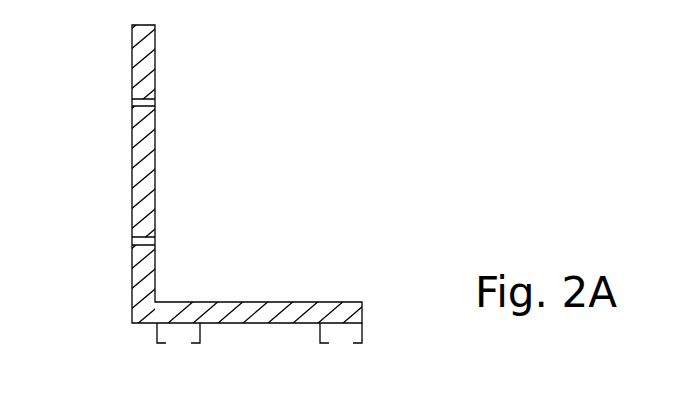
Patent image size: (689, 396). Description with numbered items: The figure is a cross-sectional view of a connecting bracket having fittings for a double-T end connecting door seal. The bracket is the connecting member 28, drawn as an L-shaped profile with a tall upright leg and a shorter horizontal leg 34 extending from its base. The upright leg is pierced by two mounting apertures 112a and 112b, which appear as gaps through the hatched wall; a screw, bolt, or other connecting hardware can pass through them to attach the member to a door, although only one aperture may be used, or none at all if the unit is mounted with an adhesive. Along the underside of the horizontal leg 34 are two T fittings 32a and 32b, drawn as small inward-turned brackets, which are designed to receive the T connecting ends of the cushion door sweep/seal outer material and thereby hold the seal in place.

The connecting member 28 is at (131, 178).
The mounting aperture 112a is at (131, 104).
The mounting aperture 112b is at (131, 241).
The flange 34 is at (307, 302).
The T fitting 32a is at (200, 351).
The T fitting 32b is at (320, 351).